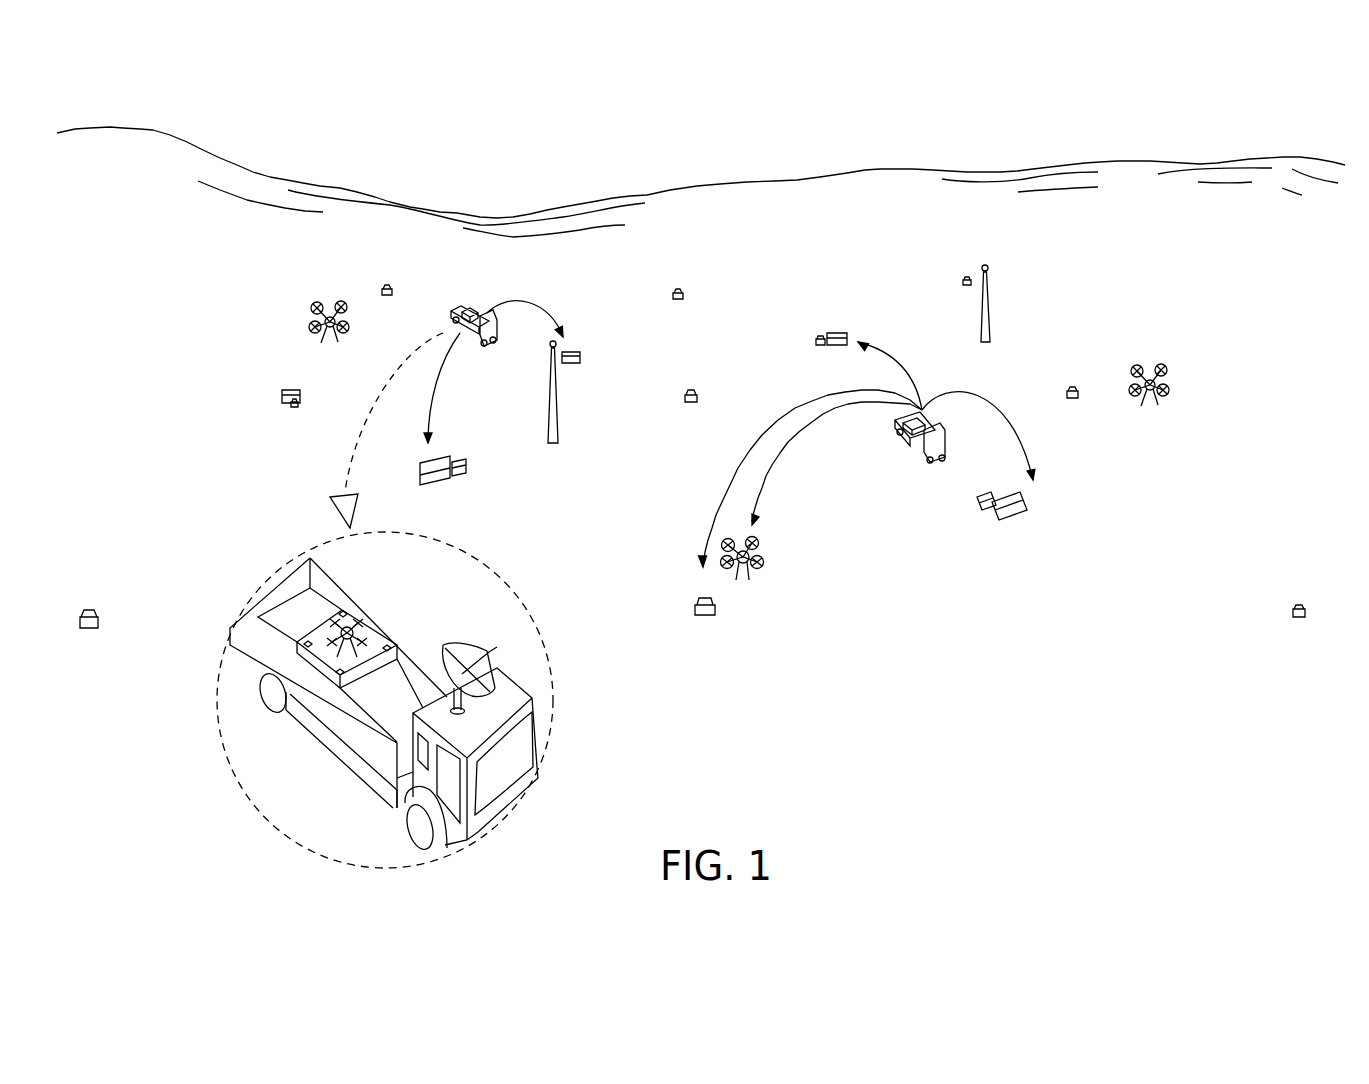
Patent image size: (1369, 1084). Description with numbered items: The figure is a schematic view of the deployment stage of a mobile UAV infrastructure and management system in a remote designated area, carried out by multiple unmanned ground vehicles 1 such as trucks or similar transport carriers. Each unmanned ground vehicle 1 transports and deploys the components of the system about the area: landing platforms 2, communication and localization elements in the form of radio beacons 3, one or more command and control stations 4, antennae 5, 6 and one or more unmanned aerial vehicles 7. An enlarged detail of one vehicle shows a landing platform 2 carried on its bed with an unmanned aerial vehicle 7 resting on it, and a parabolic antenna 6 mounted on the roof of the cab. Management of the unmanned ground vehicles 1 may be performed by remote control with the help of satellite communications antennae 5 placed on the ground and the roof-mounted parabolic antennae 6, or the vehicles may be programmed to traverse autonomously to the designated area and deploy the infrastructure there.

The unmanned ground vehicle 1 is at (477, 320).
The landing platform 2 is at (573, 352).
The radio beacon 3 is at (385, 280).
The command and control station 4 is at (693, 388).
The satellite communications antenna 5 is at (553, 417).
The parabolic antenna 6 is at (458, 660).
The unmanned aerial vehicle 7 is at (327, 313).